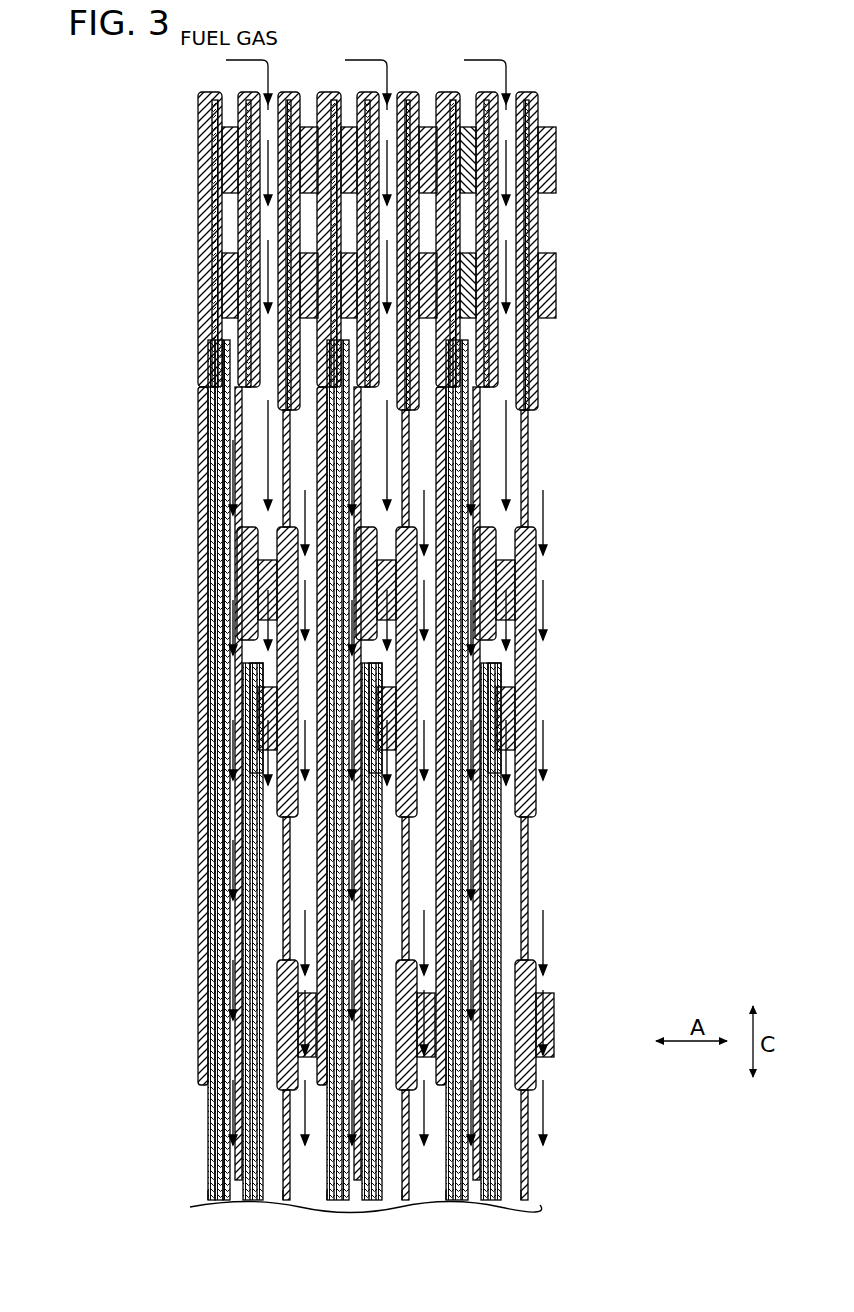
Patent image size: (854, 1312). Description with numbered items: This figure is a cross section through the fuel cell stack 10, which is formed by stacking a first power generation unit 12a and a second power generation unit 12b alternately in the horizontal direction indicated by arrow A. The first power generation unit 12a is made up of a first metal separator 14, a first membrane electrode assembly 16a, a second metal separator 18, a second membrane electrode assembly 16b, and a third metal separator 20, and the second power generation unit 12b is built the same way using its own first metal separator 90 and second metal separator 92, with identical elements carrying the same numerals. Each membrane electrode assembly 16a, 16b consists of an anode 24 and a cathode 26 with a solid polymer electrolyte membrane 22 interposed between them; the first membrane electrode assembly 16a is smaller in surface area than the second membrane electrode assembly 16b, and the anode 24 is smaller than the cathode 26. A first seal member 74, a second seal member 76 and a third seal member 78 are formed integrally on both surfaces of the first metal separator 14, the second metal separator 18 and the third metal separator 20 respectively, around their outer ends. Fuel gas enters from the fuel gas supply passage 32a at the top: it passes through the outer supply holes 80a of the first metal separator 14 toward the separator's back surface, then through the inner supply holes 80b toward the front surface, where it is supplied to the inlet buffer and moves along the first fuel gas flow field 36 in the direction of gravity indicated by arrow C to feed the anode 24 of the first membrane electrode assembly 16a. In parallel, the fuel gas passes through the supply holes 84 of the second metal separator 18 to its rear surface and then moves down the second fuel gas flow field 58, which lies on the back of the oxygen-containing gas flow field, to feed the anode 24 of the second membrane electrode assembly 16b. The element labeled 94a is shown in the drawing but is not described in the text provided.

The fuel cell stack 10 is at (530, 9).
The first power generation unit 12a is at (55, 870).
The second power generation unit 12b is at (627, 678).
The first metal separator 14 is at (200, 795).
The first membrane electrode assembly 16a is at (125, 1067).
The second membrane electrode assembly 16b is at (125, 900).
The second metal separator 18 is at (240, 1003).
The third metal separator 20 is at (205, 1138).
The solid polymer electrolyte membrane 22 is at (210, 928).
The anode 24 is at (215, 950).
The cathode 26 is at (205, 905).
The fuel gas supply passage 32a is at (458, 72).
The first fuel gas flow field 36 is at (278, 1207).
The second fuel gas flow field 58 is at (222, 1207).
The first seal member 74 is at (292, 92).
The second seal member 76 is at (236, 92).
The third seal member 78 is at (200, 135).
The outer supply holes 80a is at (285, 484).
The inner supply holes 80b is at (505, 1028).
The supply holes 84 is at (205, 426).
The first metal separator 90 is at (412, 957).
The second metal separator 92 is at (445, 772).
The supply hole 94a is at (462, 700).